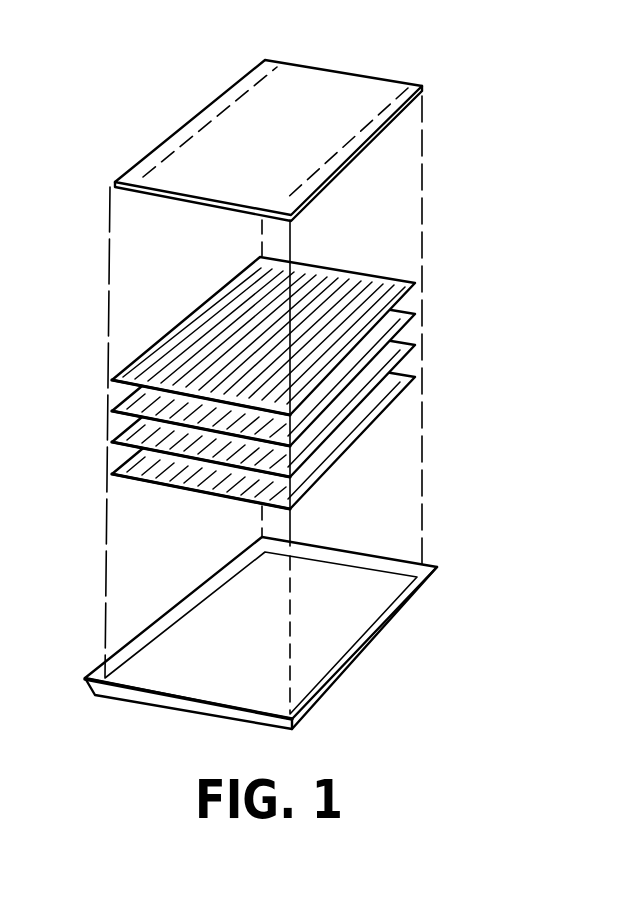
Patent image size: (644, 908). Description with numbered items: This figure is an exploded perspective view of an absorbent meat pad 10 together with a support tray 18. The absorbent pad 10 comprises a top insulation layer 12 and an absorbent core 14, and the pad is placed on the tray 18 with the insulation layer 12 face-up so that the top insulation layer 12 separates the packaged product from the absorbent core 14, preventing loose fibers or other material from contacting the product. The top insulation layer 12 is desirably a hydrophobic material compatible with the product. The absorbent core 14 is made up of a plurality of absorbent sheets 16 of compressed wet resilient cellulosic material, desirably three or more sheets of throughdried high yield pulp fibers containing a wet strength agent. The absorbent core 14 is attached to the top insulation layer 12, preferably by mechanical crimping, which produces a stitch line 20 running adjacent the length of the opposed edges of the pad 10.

The absorbent pad 10 is at (298, 364).
The top insulation layer 12 is at (268, 110).
The absorbent core 14 is at (258, 383).
The absorbent sheets 16 is at (110, 367).
The tray 18 is at (213, 651).
The stitch line 20 is at (242, 97).